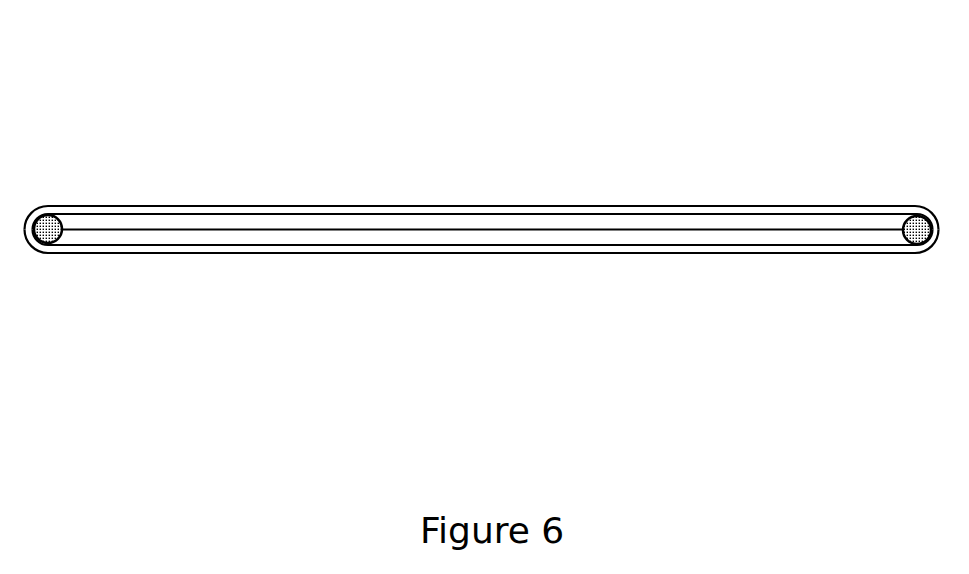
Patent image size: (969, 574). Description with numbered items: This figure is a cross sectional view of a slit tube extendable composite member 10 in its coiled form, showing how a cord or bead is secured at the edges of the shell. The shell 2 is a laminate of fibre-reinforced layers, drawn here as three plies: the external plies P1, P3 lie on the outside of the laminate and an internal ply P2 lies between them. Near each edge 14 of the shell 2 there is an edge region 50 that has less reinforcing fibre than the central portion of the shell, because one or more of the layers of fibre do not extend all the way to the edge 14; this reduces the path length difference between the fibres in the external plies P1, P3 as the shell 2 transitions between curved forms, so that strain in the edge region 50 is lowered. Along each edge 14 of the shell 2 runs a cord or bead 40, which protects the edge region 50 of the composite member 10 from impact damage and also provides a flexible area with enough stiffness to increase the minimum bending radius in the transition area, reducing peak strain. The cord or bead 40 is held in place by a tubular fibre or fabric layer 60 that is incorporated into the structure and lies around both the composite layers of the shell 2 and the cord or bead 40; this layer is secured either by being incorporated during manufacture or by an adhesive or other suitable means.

The composite member 10 is at (154, 41).
The shell 2 is at (483, 229).
The edge 14 is at (64, 221).
The cord or bead 40 is at (912, 229).
The edge region 50 is at (827, 205).
The tubular fibre or fabric layer 60 is at (888, 253).
The external ply P1 is at (198, 214).
The internal ply P2 is at (269, 224).
The external ply P3 is at (334, 241).